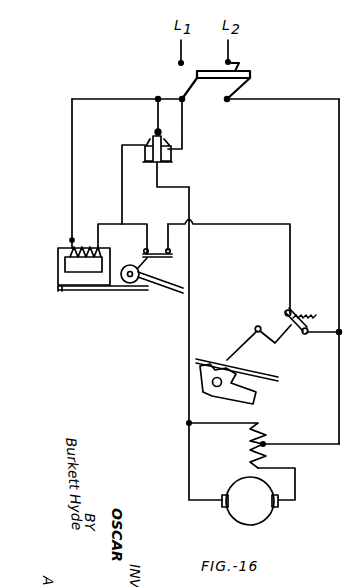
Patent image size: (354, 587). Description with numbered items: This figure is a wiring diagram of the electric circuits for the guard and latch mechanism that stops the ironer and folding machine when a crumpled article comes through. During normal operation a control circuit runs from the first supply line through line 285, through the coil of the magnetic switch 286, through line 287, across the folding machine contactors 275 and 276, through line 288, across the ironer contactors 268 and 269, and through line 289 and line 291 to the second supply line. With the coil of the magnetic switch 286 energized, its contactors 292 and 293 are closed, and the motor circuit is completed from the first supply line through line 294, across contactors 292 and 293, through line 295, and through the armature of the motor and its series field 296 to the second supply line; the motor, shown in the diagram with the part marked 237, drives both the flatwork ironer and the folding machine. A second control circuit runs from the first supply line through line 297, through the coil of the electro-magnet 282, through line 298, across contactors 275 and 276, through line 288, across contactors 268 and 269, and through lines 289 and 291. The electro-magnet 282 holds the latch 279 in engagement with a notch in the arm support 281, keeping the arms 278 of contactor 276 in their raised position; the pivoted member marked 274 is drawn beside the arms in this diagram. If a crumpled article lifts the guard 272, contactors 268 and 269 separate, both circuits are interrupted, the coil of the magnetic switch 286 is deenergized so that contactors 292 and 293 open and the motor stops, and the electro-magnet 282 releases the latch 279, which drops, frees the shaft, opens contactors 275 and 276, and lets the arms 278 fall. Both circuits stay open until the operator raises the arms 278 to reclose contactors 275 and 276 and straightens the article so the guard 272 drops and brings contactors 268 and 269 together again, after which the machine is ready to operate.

The motor 237 is at (268, 516).
The contactor 268 is at (288, 320).
The contactor 269 is at (304, 305).
The guard 272 is at (228, 359).
The pawl 274 is at (201, 383).
The contactor 275 is at (143, 253).
The contactor 276 is at (166, 246).
The arms 278 is at (176, 288).
The latch 279 is at (112, 292).
The arm support 281 is at (138, 284).
The electro-magnet 282 is at (82, 292).
The line 285 is at (182, 129).
The magnetic switch 286 is at (166, 165).
The line 287 is at (121, 187).
The line 288 is at (262, 224).
The line 289 is at (318, 336).
The line 291 is at (339, 151).
The contactor 292 is at (156, 133).
The contactor 293 is at (172, 155).
The line 294 is at (153, 98).
The line 295 is at (187, 348).
The series field 296 is at (267, 455).
The line 297 is at (100, 99).
The line 298 is at (110, 226).